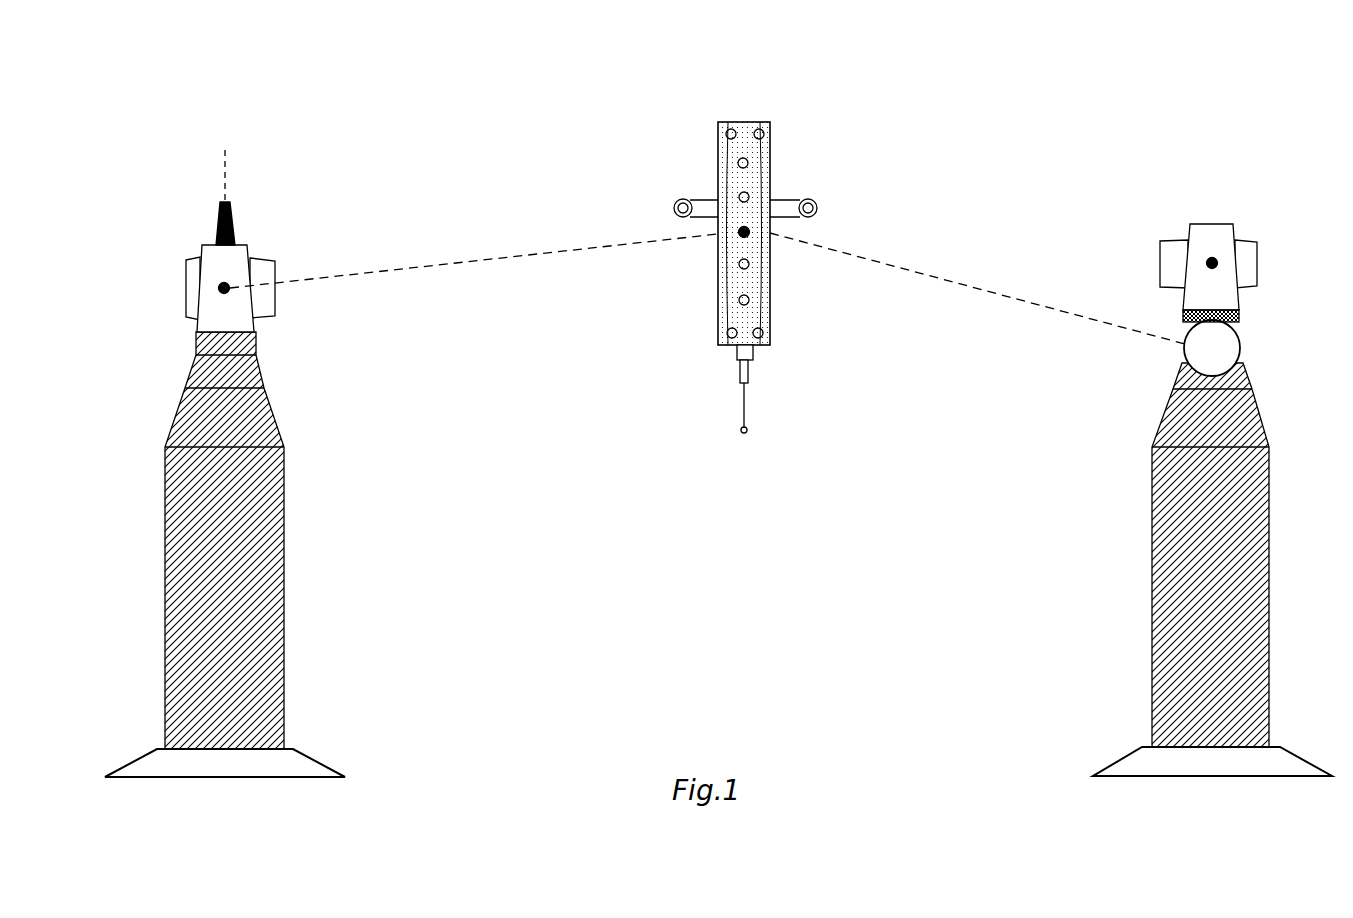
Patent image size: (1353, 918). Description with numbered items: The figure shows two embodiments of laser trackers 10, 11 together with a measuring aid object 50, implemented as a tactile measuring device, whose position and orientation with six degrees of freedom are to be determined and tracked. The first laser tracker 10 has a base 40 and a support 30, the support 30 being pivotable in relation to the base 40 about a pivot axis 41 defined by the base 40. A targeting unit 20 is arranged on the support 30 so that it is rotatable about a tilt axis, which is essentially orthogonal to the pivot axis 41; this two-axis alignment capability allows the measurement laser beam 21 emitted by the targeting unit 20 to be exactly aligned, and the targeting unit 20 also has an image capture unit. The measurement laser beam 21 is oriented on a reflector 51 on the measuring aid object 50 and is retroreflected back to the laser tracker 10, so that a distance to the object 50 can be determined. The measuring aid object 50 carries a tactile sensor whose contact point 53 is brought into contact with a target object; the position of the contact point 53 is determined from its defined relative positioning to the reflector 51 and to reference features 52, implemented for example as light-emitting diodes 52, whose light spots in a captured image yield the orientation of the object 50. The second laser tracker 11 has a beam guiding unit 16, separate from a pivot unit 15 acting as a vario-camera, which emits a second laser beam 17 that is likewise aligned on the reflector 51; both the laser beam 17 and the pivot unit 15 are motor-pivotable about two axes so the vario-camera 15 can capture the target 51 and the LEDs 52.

The first laser tracker 10 is at (184, 152).
The second laser tracker 11 is at (1186, 180).
The pivot unit 15 is at (1248, 248).
The beam guiding unit 16 is at (1228, 345).
The second laser beam 17 is at (1020, 300).
The targeting unit 20 is at (193, 268).
The measurement laser beam 21 is at (573, 250).
The support 30 is at (232, 265).
The base 40 is at (208, 347).
The pivot axis 41 is at (226, 180).
The measuring aid object 50 is at (746, 62).
The reflector 51 is at (750, 232).
The reference features 52 is at (737, 161).
The contact point 53 is at (747, 433).